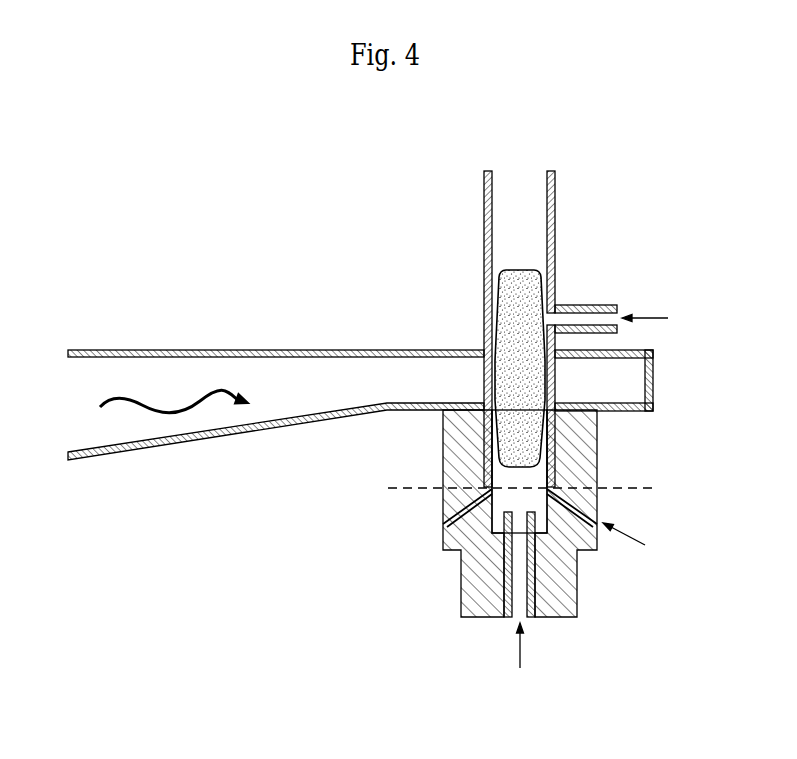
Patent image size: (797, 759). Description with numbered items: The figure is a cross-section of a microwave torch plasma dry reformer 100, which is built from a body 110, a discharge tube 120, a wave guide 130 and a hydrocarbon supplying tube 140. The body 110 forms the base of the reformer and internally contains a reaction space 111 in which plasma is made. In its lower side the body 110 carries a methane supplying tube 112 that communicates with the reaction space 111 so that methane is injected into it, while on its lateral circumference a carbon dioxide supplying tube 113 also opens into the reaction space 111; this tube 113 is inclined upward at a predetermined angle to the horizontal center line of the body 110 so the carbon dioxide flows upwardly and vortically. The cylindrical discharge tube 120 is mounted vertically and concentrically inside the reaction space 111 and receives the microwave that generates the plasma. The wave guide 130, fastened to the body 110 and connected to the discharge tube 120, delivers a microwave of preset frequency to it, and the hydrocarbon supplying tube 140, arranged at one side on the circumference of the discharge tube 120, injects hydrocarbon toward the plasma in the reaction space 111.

The microwave torch plasma dry reformer 100 is at (338, 288).
The body 110 is at (601, 605).
The reaction space 111 is at (517, 481).
The methane supplying tube 112 is at (507, 588).
The carbon dioxide supplying tube 113 is at (577, 510).
The discharge tube 120 is at (484, 303).
The wave guide 130 is at (255, 349).
The hydrocarbon supplying tube 140 is at (583, 305).